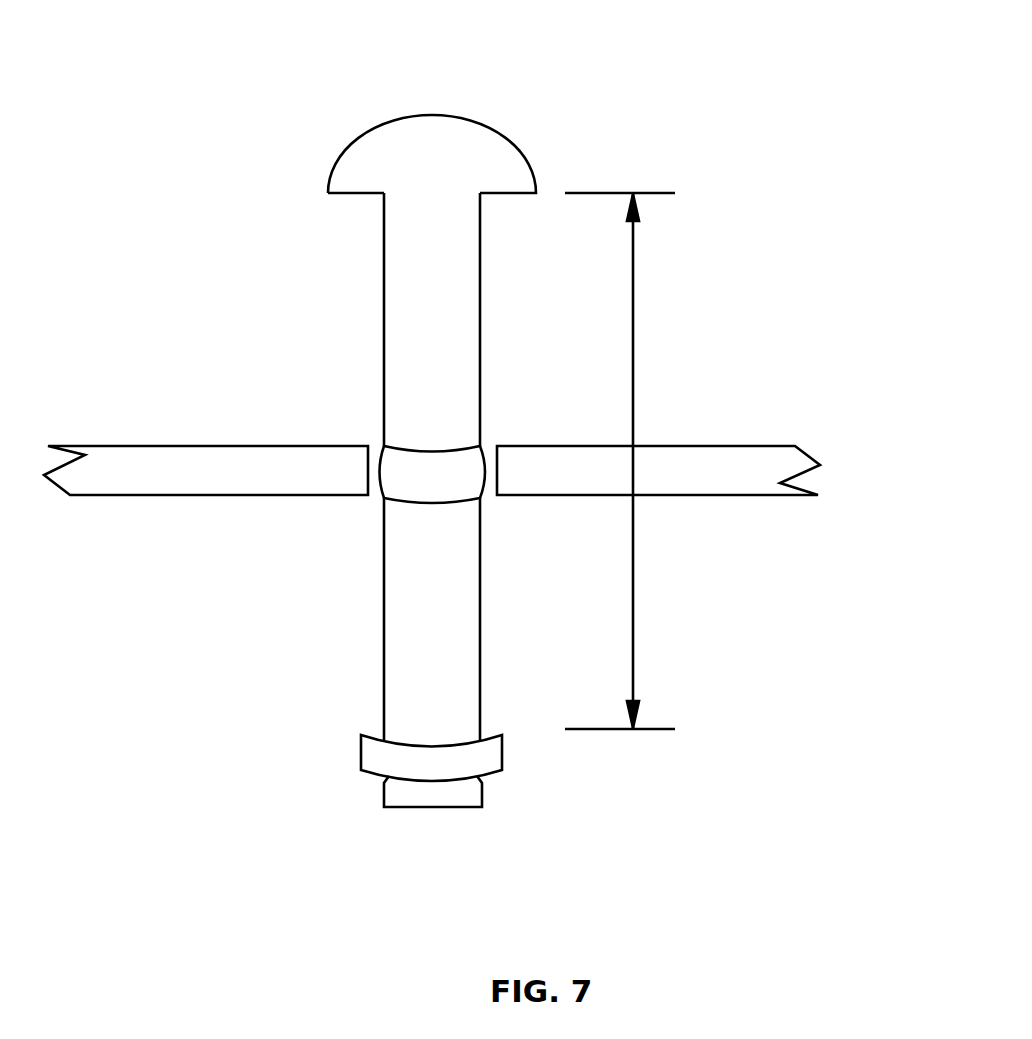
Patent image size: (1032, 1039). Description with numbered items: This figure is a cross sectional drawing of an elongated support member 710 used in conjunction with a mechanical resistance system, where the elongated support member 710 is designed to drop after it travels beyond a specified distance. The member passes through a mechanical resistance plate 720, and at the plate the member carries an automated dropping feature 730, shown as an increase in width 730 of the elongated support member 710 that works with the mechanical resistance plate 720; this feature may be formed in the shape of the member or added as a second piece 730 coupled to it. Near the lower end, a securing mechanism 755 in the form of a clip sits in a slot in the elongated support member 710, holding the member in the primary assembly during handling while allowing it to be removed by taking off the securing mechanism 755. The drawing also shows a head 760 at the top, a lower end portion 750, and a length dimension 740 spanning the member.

The elongated support member 710 is at (382, 341).
The mechanical resistance plate 720 is at (713, 455).
The automated dropping feature 730 is at (433, 446).
The rivet length dimension 740 is at (634, 302).
The lower end block 750 is at (408, 739).
The elongated support member securing mechanism 755 is at (396, 755).
The rivet head 760 is at (436, 113).